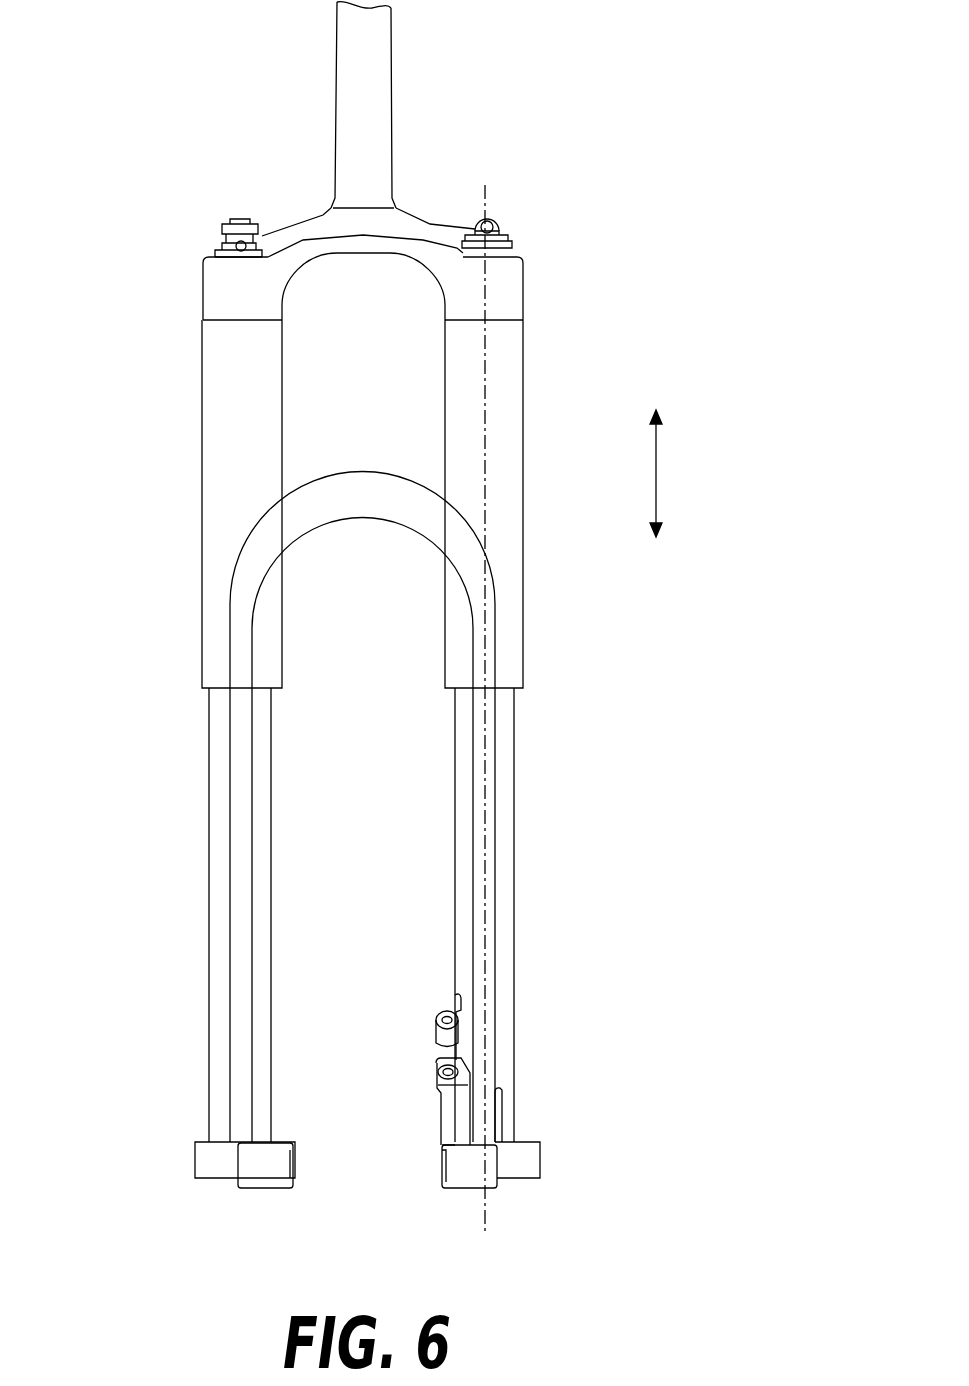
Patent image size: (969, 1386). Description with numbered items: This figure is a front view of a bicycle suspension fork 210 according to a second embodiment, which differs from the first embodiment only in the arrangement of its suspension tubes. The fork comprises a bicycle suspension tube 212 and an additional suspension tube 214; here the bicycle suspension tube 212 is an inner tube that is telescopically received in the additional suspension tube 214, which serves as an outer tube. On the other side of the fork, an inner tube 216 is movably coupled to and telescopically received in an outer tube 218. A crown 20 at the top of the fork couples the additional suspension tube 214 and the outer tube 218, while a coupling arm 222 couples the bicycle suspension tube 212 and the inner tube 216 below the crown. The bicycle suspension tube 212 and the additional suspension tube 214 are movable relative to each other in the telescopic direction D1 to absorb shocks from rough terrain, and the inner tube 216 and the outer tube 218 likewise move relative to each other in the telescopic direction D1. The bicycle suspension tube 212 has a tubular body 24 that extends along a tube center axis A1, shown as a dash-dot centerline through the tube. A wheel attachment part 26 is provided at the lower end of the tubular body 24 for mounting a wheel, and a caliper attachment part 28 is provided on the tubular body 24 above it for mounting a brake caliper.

The bicycle suspension fork 210 is at (542, 255).
The crown 20 is at (375, 254).
The additional suspension tube 214 is at (534, 361).
The outer tube 218 is at (182, 479).
The bicycle suspension tube 212 is at (528, 784).
The inner tube 216 is at (193, 815).
The coupling arm 222 is at (350, 471).
The tubular body 24 is at (503, 988).
The wheel attachment part 26 is at (465, 1175).
The caliper attachment part 28 is at (421, 1057).
The tube center axis A1 is at (492, 1065).
The telescopic direction D1 is at (656, 478).